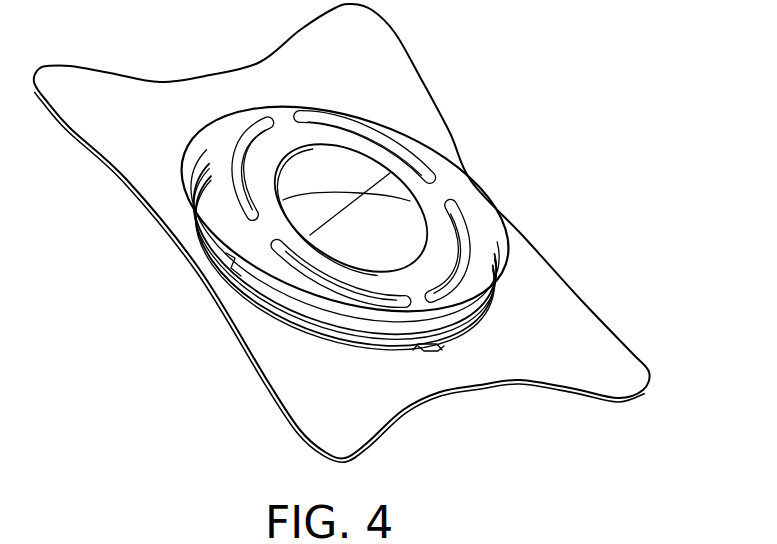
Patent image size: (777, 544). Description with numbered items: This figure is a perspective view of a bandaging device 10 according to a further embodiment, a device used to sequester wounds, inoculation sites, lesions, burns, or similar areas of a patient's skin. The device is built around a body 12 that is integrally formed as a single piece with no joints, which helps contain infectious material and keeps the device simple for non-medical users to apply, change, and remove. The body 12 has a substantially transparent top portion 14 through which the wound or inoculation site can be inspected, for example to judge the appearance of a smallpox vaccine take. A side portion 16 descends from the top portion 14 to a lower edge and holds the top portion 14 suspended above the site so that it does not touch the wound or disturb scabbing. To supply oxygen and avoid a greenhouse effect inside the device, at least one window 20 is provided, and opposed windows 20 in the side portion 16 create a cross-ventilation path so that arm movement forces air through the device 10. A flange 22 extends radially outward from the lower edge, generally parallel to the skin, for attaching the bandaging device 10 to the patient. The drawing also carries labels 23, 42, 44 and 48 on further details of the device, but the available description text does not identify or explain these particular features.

The bandaging device 10 is at (650, 187).
The body 12 is at (425, 147).
The top portion 14 is at (408, 220).
The side portion 16 is at (378, 330).
The window 20 is at (473, 247).
The flange 22 is at (253, 302).
The notch 23 is at (214, 257).
The arcuate slot 42 is at (277, 108).
The arcuate slot 44 is at (240, 170).
The flexible pad 48 is at (631, 371).